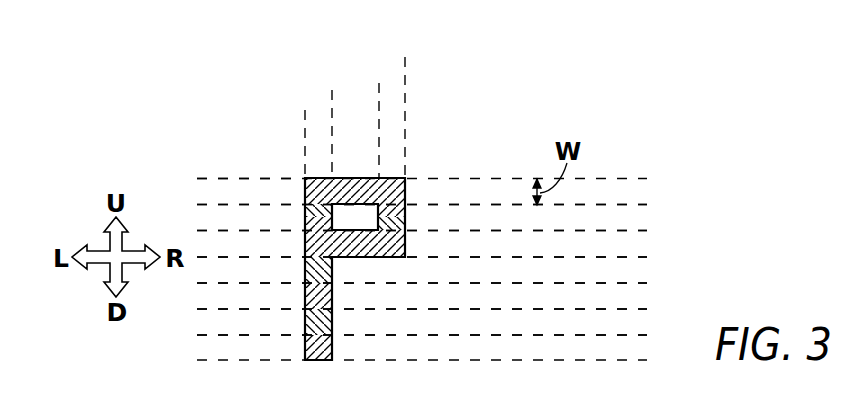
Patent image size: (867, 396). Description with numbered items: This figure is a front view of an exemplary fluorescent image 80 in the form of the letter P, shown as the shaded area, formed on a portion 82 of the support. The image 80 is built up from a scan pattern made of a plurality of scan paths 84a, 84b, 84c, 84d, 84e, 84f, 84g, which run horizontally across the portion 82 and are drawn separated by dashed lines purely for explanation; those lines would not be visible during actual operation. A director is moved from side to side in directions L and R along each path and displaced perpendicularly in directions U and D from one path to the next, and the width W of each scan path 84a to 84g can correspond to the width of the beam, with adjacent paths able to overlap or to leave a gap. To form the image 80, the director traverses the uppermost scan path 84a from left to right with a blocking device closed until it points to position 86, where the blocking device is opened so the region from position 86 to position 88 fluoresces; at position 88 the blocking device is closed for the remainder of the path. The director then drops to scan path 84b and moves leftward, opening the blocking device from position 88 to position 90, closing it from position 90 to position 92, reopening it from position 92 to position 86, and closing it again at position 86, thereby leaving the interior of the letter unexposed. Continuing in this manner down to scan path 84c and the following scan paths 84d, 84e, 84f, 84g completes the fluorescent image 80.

The fluorescent image 80 is at (414, 190).
The portion of the support 82 is at (238, 193).
The uppermost scan path 84a is at (444, 193).
The scan path 84b is at (444, 219).
The scan path 84c is at (444, 245).
The scan path 84d is at (444, 271).
The scan path 84e is at (444, 297).
The scan path 84f is at (444, 323).
The scan path 84g is at (444, 349).
The position 86 is at (305, 134).
The position 88 is at (405, 103).
The position 90 is at (379, 116).
The position 92 is at (332, 121).